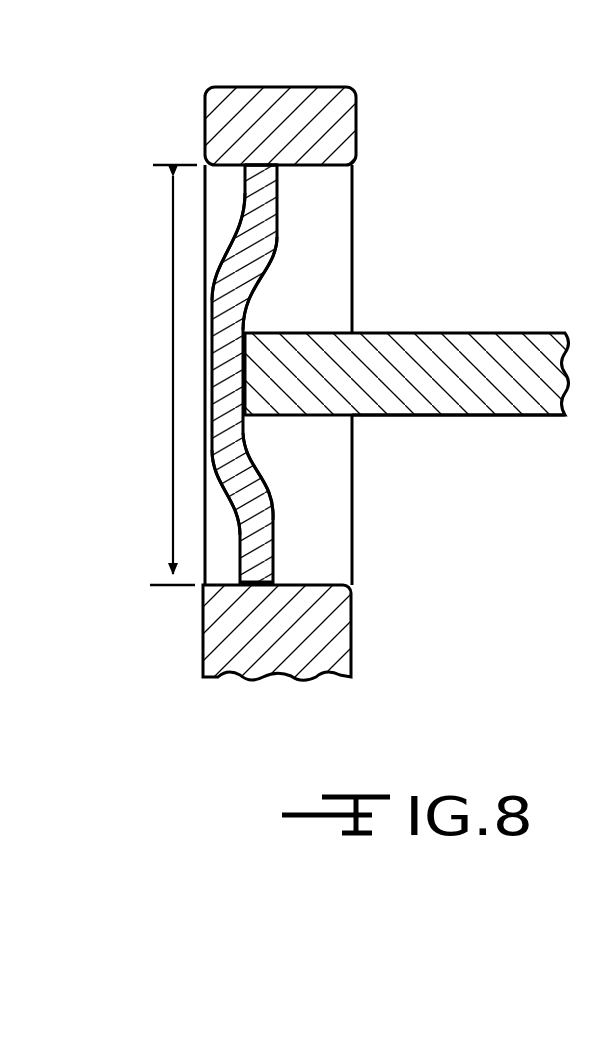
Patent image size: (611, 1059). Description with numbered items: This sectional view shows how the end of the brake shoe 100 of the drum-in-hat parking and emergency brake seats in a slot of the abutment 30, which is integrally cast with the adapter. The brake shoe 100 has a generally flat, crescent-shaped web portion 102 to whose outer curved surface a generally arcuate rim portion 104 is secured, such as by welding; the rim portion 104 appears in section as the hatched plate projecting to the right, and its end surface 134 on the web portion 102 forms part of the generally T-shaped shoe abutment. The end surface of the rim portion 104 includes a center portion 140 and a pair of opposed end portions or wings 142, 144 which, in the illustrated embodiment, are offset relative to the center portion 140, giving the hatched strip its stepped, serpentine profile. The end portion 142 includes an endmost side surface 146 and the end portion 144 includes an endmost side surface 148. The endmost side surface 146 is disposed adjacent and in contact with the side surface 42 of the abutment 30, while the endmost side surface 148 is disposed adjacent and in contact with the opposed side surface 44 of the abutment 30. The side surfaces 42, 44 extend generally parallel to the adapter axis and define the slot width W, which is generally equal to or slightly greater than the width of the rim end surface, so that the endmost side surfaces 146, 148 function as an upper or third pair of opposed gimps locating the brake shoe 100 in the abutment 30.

The abutment 30 is at (277, 80).
The side surface 42 is at (313, 166).
The side surface 44 is at (322, 585).
The brake shoe 100 is at (486, 452).
The web portion 102 is at (475, 322).
The rim portion 104 is at (280, 267).
The end surface 134 is at (372, 398).
The center portion 140 is at (227, 378).
The end portion 142 is at (257, 187).
The end portion 144 is at (253, 560).
The endmost side surface 146 is at (263, 163).
The endmost side surface 148 is at (257, 587).
The slot width W is at (172, 442).